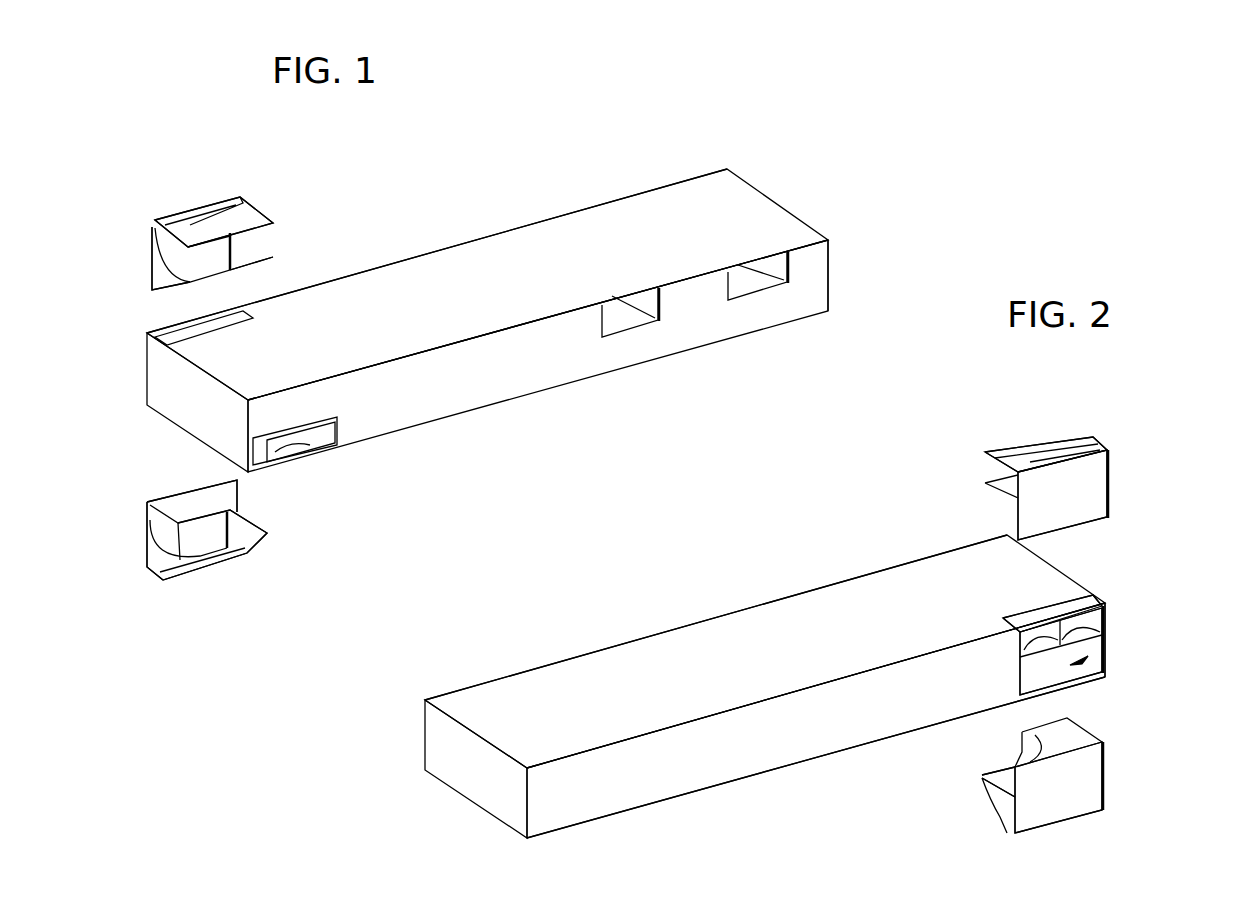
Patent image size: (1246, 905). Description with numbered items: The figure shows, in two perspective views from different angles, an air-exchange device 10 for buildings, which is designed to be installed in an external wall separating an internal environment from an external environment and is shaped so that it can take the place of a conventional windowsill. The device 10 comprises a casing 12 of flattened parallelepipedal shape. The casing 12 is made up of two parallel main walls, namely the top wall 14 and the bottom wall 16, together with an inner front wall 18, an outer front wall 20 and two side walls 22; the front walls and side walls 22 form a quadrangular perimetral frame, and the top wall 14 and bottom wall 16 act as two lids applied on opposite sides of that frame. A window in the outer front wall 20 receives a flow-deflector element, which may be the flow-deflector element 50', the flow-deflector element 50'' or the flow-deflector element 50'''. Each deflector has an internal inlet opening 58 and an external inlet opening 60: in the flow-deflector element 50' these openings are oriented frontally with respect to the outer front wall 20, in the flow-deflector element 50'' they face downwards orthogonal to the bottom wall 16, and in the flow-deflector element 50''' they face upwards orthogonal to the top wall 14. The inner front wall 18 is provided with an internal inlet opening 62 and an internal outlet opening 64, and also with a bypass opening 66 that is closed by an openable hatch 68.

In FIG. 1, the air-exchange device 10 is at (908, 135).
In FIG. 2, the air-exchange device 10 is at (378, 673).
In FIG. 1, the casing 12 is at (730, 162).
In FIG. 2, the casing 12 is at (584, 650).
In FIG. 1, the top wall 14 is at (568, 235).
In FIG. 2, the top wall 14 is at (758, 628).
In FIG. 2, the bottom wall 16 is at (815, 760).
In FIG. 1, the inner front wall 18 is at (535, 378).
In FIG. 2, the inner front wall 18 is at (875, 572).
In FIG. 1, the outer front wall 20 is at (410, 256).
In FIG. 2, the outer front wall 20 is at (703, 763).
In FIG. 1, the side walls 22 is at (812, 223).
In FIG. 2, the side walls 22 is at (1053, 560).
In FIG. 2, the flow-deflector element 50' is at (1099, 645).
In FIG. 1, the flow-deflector element 50'' is at (173, 551).
In FIG. 2, the flow-deflector element 50'' is at (1098, 775).
In FIG. 1, the flow-deflector element 50''' is at (181, 234).
In FIG. 2, the flow-deflector element 50''' is at (1096, 461).
In FIG. 1, the internal inlet opening 58 is at (223, 208).
In FIG. 2, the internal inlet opening 58 is at (1037, 450).
In FIG. 1, the external inlet opening 60 is at (177, 213).
In FIG. 2, the external inlet opening 60 is at (1070, 437).
In FIG. 1, the internal inlet opening 62 is at (605, 318).
In FIG. 1, the internal outlet opening 64 is at (737, 283).
In FIG. 1, the bypass opening 66 is at (340, 432).
In FIG. 1, the openable hatch 68 is at (300, 440).